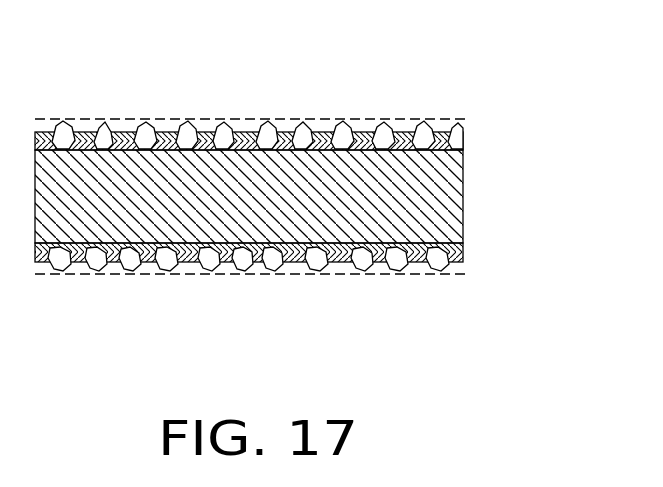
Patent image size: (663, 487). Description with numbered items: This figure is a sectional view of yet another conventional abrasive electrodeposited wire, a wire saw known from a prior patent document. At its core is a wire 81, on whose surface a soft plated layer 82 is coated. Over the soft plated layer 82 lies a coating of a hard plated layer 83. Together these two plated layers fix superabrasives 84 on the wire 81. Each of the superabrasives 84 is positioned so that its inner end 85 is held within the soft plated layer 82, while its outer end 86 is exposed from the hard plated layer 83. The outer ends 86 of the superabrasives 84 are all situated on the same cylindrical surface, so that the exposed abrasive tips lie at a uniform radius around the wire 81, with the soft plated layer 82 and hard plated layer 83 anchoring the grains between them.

The wire 81 is at (438, 198).
The soft plated layer 82 is at (465, 148).
The hard plated layer 83 is at (468, 133).
The superabrasives 84 is at (342, 134).
The inner end 85 is at (467, 232).
The outer end 86 is at (455, 274).